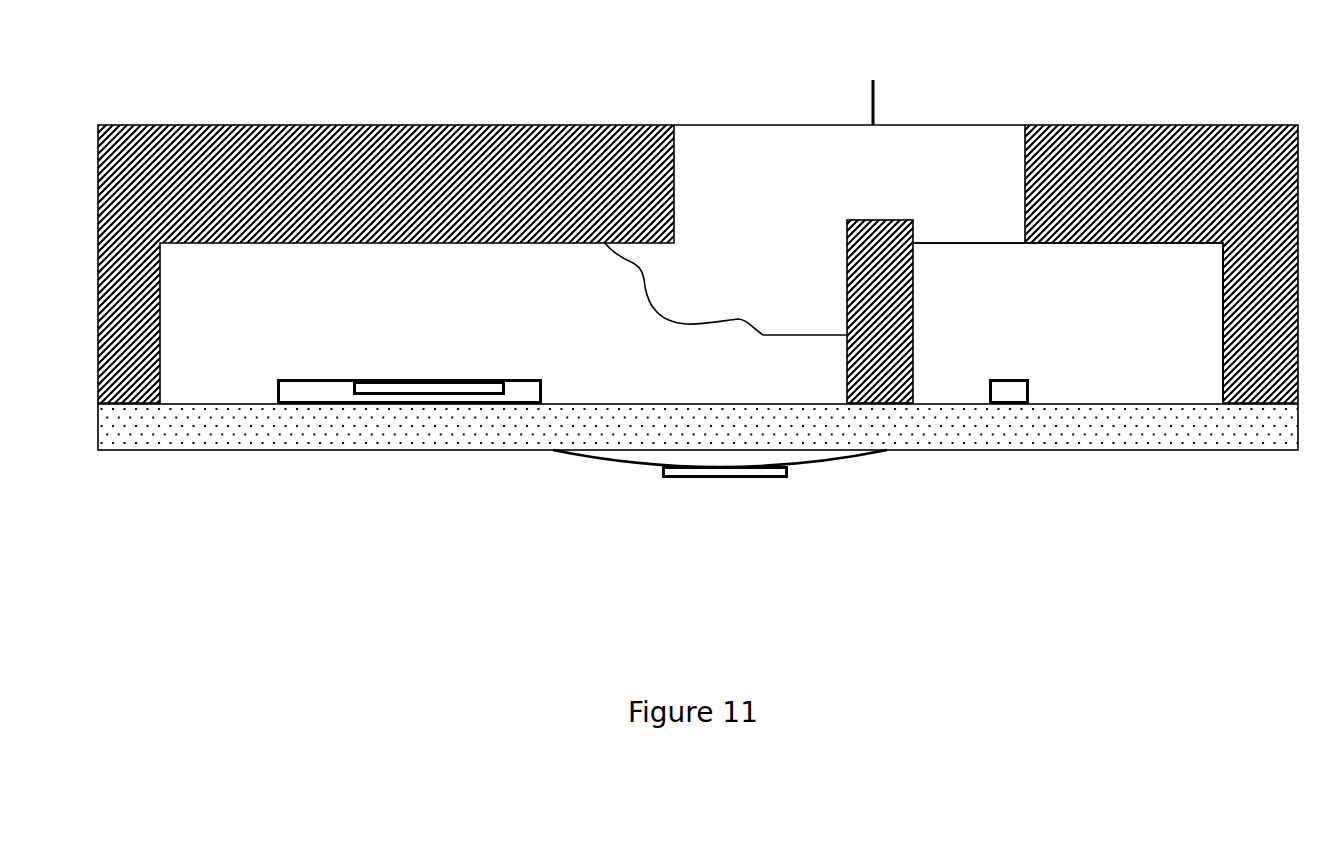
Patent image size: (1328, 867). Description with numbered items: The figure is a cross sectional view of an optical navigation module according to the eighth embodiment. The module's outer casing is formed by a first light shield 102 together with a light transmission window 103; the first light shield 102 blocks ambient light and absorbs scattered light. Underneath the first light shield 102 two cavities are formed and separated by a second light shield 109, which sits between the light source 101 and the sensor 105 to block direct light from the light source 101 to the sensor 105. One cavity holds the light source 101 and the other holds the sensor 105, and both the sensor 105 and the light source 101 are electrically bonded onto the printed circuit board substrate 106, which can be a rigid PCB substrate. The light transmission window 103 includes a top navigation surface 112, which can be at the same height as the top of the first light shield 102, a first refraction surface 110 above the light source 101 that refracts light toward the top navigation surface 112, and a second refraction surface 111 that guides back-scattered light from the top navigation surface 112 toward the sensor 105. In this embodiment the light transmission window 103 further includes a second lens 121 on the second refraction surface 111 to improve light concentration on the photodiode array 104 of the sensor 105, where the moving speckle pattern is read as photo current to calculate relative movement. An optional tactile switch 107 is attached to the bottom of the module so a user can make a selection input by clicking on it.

The light source 101 is at (1030, 393).
The first light shield 102 is at (503, 200).
The light transmission window 103 is at (825, 193).
The photodiode array 104 is at (383, 380).
The sensor 105 is at (313, 404).
The printed circuit board substrate 106 is at (545, 440).
The tactile switch 107 is at (788, 473).
The second light shield 109 is at (898, 237).
The first refraction surface 110 is at (965, 242).
The second refraction surface 111 is at (763, 328).
The top navigation surface 112 is at (886, 86).
The second lens 121 is at (675, 318).